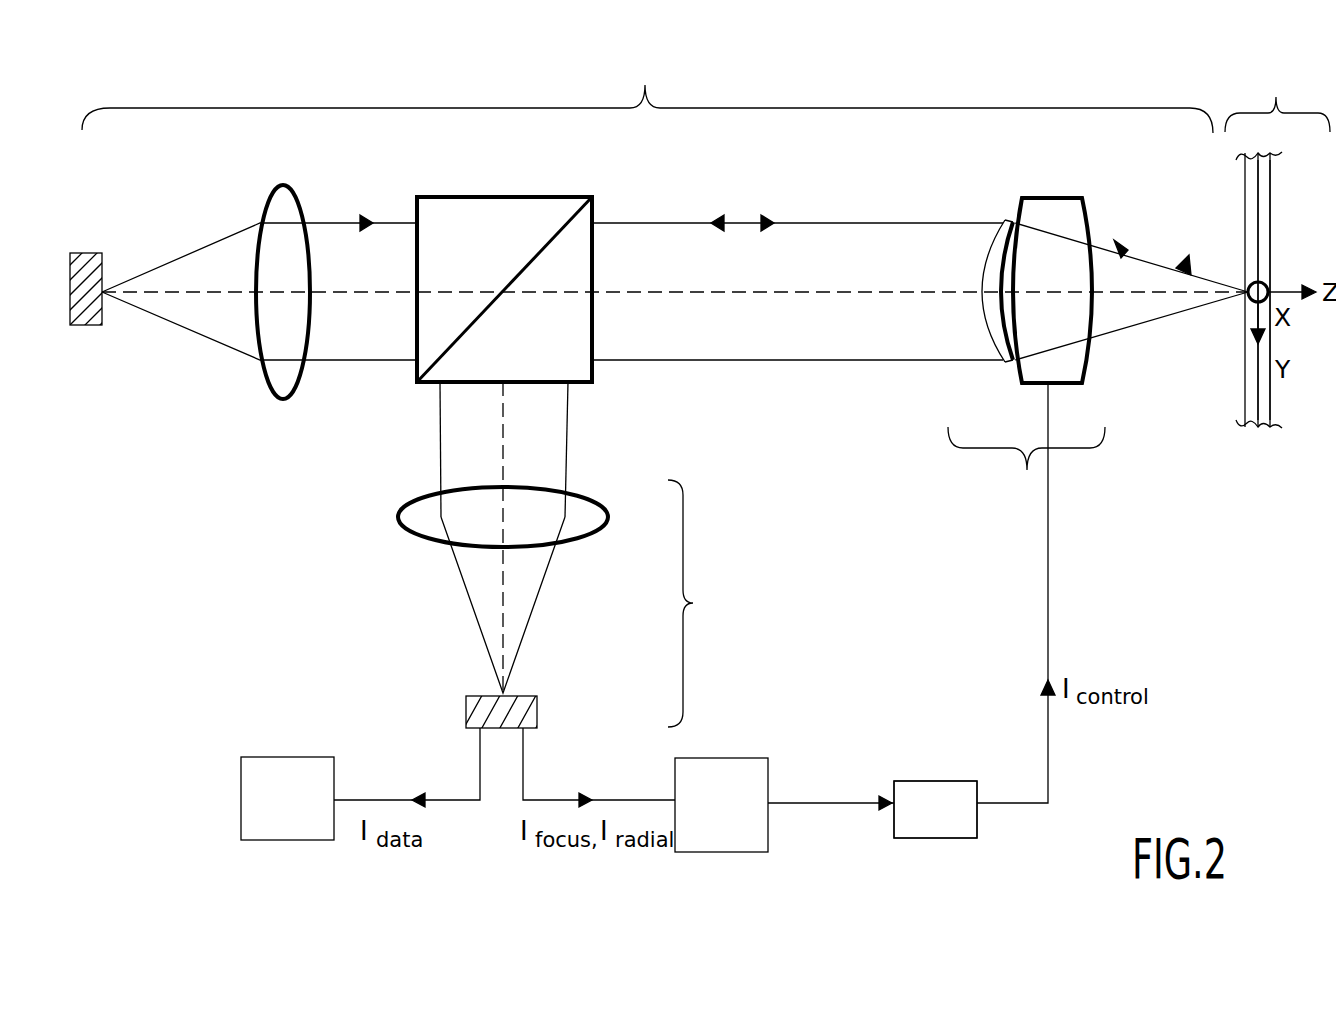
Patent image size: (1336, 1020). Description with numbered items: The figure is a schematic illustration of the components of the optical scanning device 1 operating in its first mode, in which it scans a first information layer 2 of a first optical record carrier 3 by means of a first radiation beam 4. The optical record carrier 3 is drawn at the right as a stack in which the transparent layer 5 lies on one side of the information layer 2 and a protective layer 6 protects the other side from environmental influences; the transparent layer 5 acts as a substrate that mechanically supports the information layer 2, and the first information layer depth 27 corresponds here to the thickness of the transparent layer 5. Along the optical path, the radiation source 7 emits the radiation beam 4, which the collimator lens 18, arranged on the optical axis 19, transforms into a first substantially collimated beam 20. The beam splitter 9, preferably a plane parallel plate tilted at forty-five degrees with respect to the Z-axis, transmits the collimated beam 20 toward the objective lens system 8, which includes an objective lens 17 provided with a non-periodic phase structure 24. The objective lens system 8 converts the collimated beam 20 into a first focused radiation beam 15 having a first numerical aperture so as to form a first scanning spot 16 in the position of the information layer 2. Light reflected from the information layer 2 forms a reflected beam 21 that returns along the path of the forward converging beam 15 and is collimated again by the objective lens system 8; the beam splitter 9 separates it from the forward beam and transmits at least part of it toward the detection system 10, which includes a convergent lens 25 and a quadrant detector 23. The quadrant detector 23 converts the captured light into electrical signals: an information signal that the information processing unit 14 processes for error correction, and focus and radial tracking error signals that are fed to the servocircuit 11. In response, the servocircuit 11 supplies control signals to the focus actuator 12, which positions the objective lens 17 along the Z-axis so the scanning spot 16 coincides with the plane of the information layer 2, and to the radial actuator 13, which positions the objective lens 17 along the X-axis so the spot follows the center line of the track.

The optical scanning device 1 is at (654, 76).
The first information layer 2 is at (1281, 184).
The first optical record carrier 3 is at (1276, 97).
The first radiation beam 4 is at (176, 258).
The transparent layer 5 is at (1253, 228).
The protective layer 6 is at (1270, 398).
The radiation source 7 is at (84, 254).
The objective lens system 8 is at (1035, 509).
The beam splitter 9 is at (480, 196).
The detection system 10 is at (734, 616).
The servocircuit 11 is at (718, 853).
The focus actuator 12 is at (928, 839).
The radial actuator 13 is at (935, 809).
The information processing unit 14 is at (272, 757).
The first focused radiation beam 15 is at (1180, 262).
The first scanning spot 16 is at (1262, 283).
The objective lens 17 is at (1042, 197).
The collimator lens 18 is at (292, 182).
The optical axis 19 is at (806, 297).
The first substantially collimated beam 20 is at (366, 210).
The reflected beam 21 is at (1124, 244).
The quadrant detector 23 is at (466, 710).
The non-periodic phase structure 24 is at (1000, 368).
The convergent lens 25 is at (400, 520).
The first information layer depth 27 is at (1247, 475).